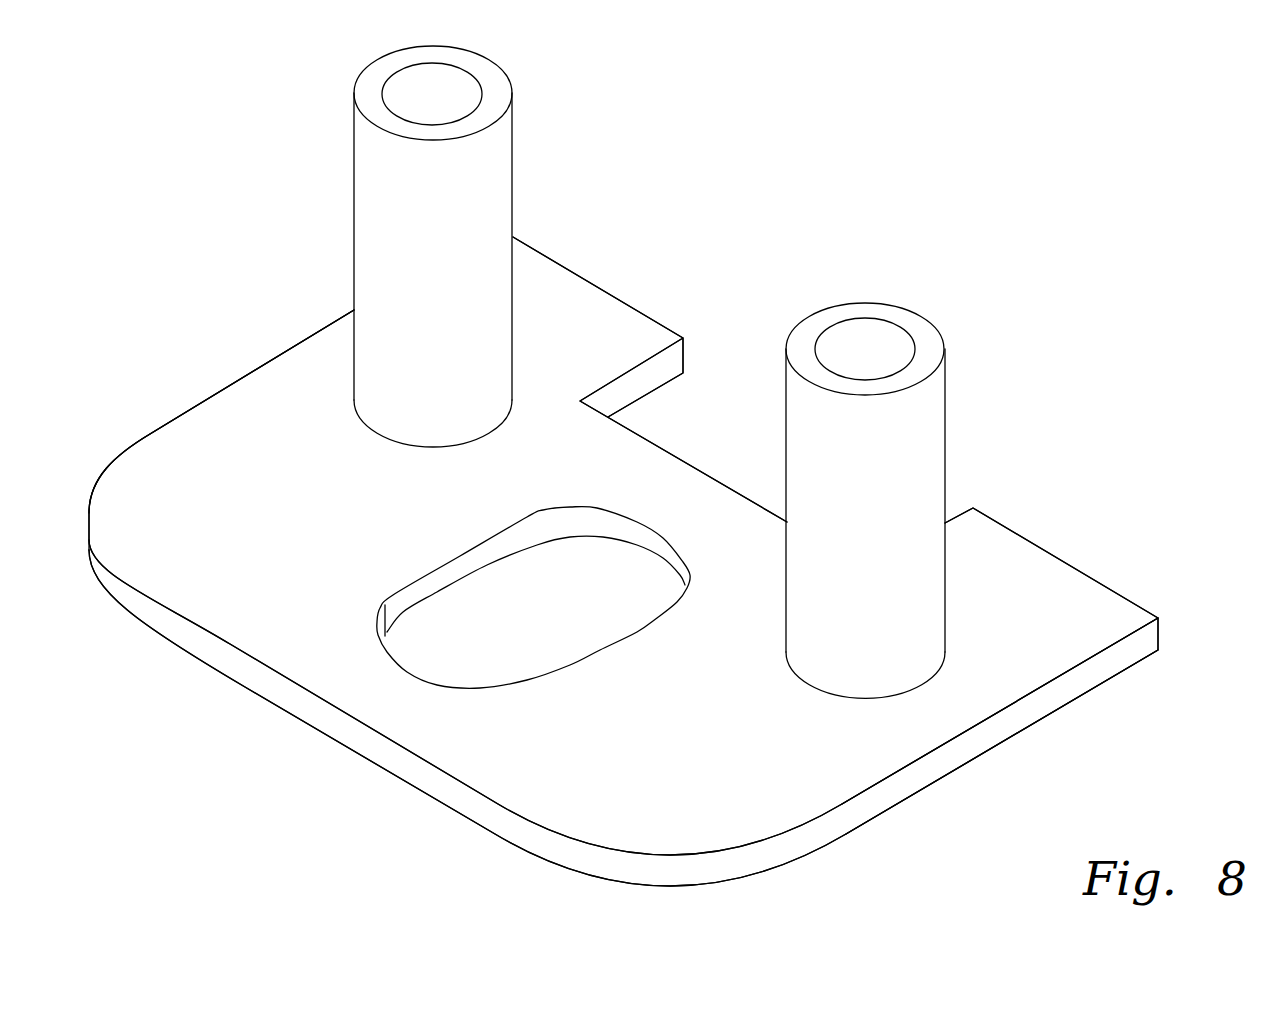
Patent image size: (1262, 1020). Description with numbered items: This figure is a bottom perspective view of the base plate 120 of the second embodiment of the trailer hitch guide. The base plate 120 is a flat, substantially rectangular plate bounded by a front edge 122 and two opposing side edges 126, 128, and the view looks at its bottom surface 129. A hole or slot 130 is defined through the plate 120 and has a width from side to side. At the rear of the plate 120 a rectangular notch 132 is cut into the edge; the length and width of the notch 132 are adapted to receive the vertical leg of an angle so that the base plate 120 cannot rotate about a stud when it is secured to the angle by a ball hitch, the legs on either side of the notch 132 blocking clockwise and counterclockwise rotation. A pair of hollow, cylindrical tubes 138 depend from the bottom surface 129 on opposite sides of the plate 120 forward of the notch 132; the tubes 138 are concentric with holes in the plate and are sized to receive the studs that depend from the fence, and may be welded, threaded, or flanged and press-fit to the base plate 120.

The base plate 120 is at (892, 847).
The front edge 122 is at (368, 742).
The side edge 126 is at (252, 368).
The side edge 128 is at (1037, 702).
The bottom surface 129 is at (203, 488).
The slot 130 is at (627, 632).
The rectangular notch 132 is at (747, 415).
The hollow cylindrical tubes 138 is at (497, 185).